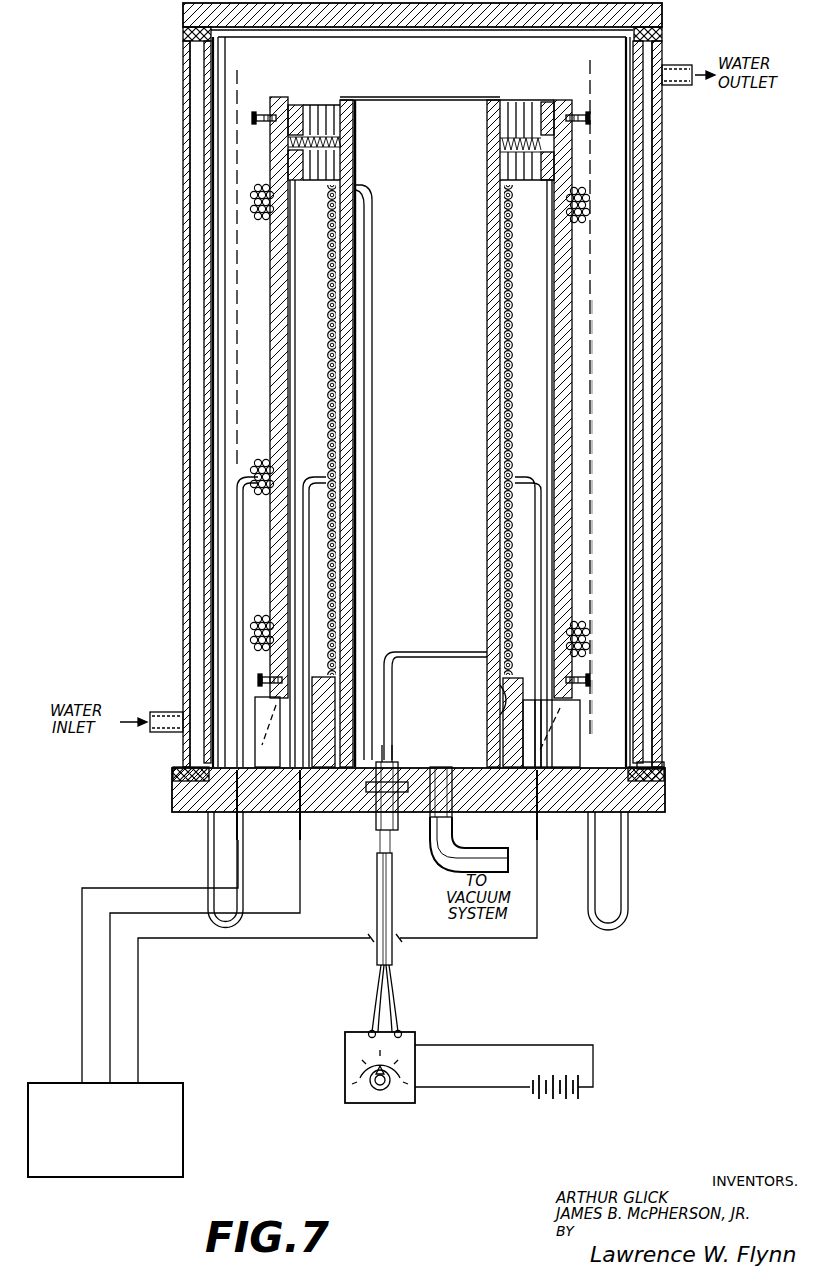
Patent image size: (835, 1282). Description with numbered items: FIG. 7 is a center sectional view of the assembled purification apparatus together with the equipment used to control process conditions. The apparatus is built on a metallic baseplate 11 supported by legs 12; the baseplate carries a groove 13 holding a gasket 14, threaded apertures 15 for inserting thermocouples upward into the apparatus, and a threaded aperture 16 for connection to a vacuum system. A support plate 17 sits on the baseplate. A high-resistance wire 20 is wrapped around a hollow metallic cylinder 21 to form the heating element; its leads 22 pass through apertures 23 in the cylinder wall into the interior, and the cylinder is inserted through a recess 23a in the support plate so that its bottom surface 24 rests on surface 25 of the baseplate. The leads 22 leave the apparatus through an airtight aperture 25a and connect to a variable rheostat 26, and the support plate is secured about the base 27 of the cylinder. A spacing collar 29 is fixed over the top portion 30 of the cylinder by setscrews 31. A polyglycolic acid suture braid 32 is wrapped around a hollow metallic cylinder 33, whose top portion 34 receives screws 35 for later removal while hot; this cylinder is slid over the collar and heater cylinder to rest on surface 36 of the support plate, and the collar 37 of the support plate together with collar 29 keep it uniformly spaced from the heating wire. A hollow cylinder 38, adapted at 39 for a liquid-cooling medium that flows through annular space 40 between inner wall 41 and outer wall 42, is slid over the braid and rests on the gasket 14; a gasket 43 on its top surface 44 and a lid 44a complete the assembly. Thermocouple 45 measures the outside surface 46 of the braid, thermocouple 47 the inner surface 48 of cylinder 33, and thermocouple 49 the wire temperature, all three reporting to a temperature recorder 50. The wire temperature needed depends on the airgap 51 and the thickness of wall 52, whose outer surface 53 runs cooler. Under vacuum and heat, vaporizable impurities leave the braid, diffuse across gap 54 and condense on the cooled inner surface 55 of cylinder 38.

The baseplate 11 is at (665, 800).
The legs 12 is at (208, 850).
The groove 13 is at (664, 774).
The gasket 14 is at (655, 770).
The threaded apertures 15 is at (240, 790).
The threaded aperture 16 is at (444, 765).
The support plate 17 is at (582, 748).
The high-resistance wire 20 is at (332, 318).
The hollow metallic cylinder 21 is at (340, 125).
The leads 22 is at (377, 886).
The apertures 23 is at (358, 186).
The recess 23a is at (322, 688).
The bottom surface 24 is at (490, 770).
The surface 25 is at (398, 780).
The aperture 25a is at (392, 766).
The variable rheostat 26 is at (345, 1057).
The base 27 is at (506, 690).
The spacing collar 29 is at (548, 108).
The top portion 30 is at (510, 118).
The setscrews 31 is at (522, 140).
The polyglycolic acid suture braid 32 is at (585, 195).
The hollow metallic cylinder 33 is at (290, 662).
The top portion 34 is at (254, 131).
The screws 35 is at (584, 112).
The surface 36 is at (545, 700).
The collar 37 is at (517, 722).
The hollow cylinder 38 is at (204, 592).
The cooling medium connection 39 is at (160, 712).
The annular space 40 is at (188, 458).
The inner wall 41 is at (633, 152).
The outer wall 42 is at (663, 152).
The gasket 43 is at (183, 30).
The top surface 44 is at (660, 36).
The lid 44a is at (183, 15).
The thermocouple 45 is at (241, 472).
The outside surface 46 is at (256, 192).
The thermocouple 47 is at (538, 472).
The inner surface 48 is at (548, 376).
The thermocouple 49 is at (309, 472).
The temperature recorder 50 is at (183, 1120).
The airgap 51 is at (290, 285).
The wall 52 is at (277, 97).
The outer surface 53 is at (578, 376).
The gap 54 is at (237, 396).
The inner surface 55 is at (628, 630).